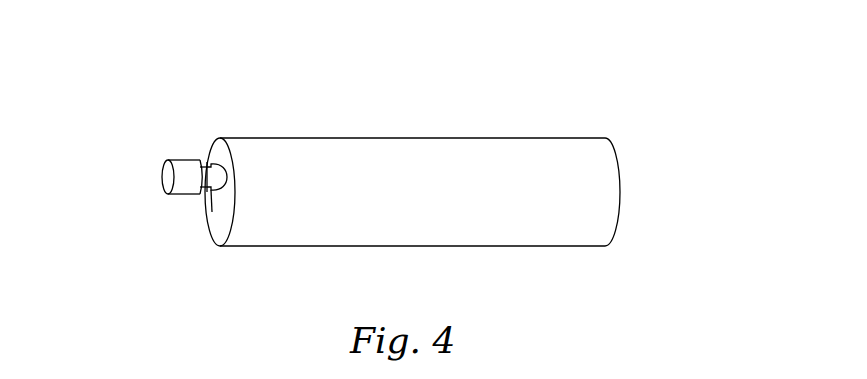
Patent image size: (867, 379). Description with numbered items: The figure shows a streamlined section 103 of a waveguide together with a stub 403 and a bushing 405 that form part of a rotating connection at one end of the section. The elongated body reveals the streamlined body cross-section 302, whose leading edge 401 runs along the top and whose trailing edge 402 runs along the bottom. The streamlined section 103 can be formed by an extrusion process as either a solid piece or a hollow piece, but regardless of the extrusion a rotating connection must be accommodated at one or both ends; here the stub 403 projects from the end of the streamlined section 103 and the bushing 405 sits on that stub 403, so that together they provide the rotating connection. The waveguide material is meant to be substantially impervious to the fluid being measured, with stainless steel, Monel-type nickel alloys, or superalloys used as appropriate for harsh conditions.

The streamlined section 103 is at (448, 195).
The streamlined body cross-section 302 is at (222, 160).
The leading edge 401 is at (510, 138).
The trailing edge 402 is at (488, 246).
The stub 403 is at (208, 208).
The bushing 405 is at (185, 180).